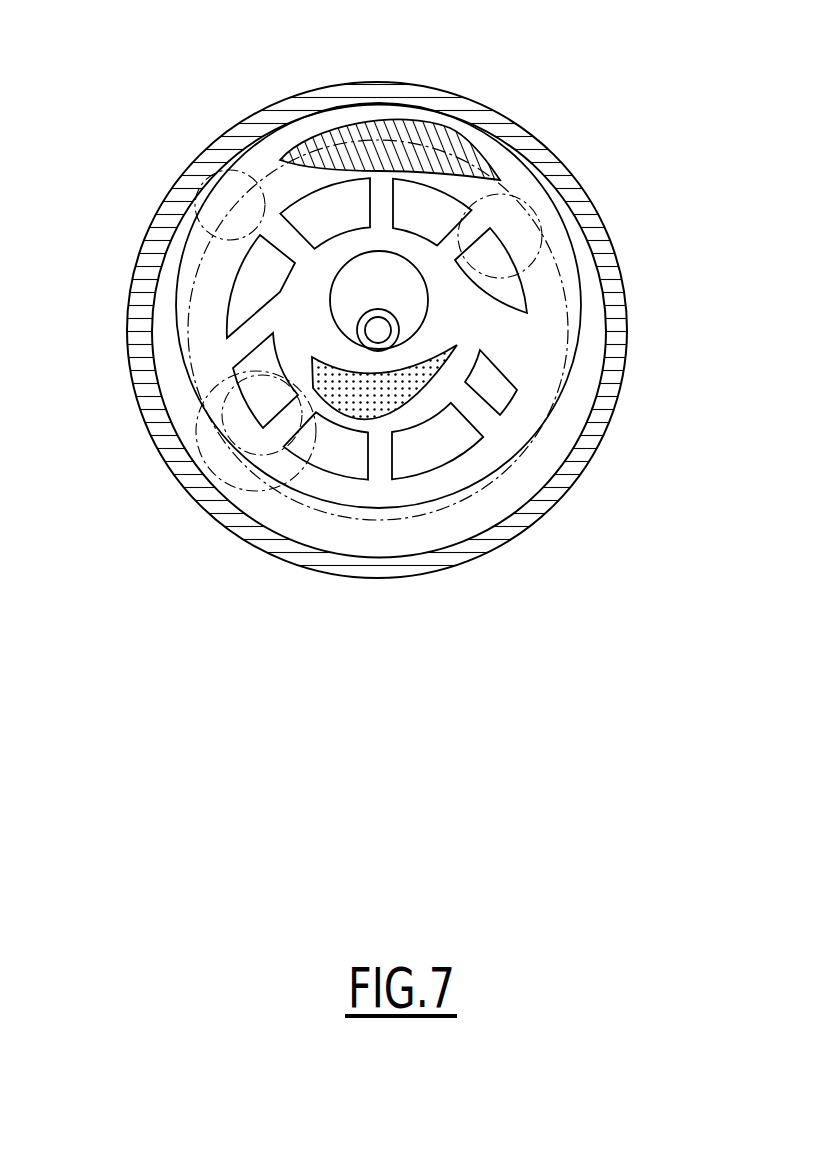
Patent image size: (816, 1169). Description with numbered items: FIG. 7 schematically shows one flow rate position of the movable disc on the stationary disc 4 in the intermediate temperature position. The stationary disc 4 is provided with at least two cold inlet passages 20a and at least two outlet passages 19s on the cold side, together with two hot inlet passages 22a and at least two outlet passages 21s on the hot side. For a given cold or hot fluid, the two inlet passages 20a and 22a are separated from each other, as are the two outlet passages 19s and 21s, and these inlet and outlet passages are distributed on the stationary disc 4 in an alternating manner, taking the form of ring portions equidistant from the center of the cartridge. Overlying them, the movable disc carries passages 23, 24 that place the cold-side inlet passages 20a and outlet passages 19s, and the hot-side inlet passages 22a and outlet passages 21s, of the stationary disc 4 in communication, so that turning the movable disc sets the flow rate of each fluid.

The stationary disc 4 is at (610, 444).
The outlet passages 19s is at (412, 198).
The cold inlet passages 20a is at (313, 212).
The outlet passages 21s is at (503, 383).
The hot inlet passages 22a is at (457, 440).
The passage 23 is at (403, 133).
The passage 24 is at (403, 397).